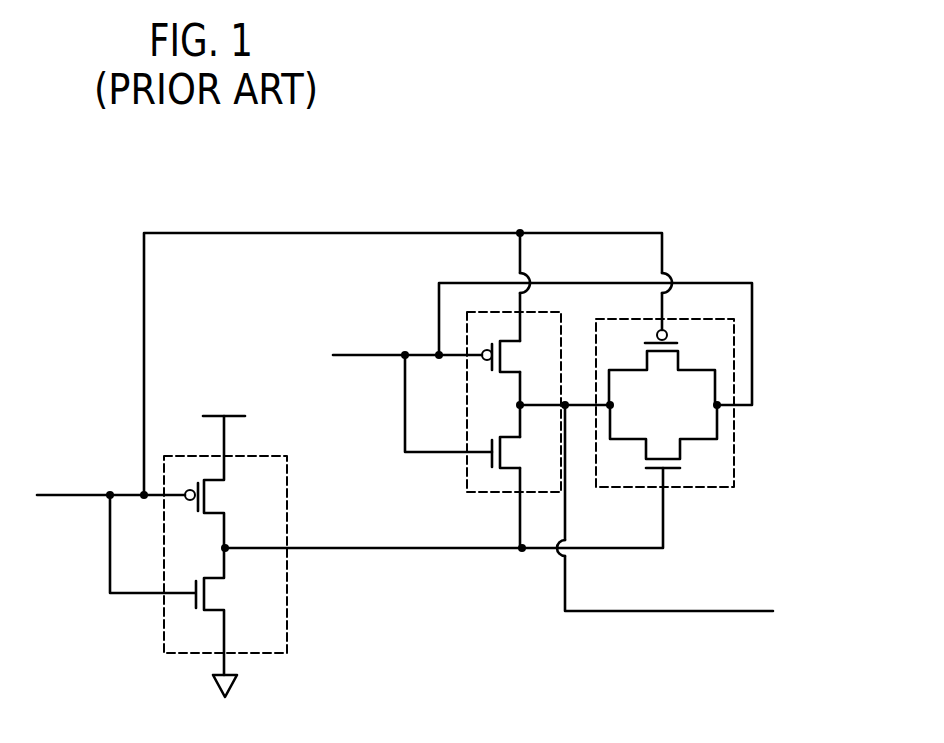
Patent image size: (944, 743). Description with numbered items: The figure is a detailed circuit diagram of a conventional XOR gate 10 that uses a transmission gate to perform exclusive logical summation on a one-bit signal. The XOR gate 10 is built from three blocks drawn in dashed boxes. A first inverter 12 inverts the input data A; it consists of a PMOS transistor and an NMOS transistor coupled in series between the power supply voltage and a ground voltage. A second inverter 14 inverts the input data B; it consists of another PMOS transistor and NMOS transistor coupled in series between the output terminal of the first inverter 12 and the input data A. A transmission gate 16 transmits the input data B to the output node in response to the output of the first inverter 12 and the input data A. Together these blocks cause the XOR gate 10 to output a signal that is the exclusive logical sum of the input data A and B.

The XOR gate 10 is at (695, 212).
The first inverter 12 is at (287, 595).
The second inverter 14 is at (467, 483).
The transmission gate 16 is at (734, 430).